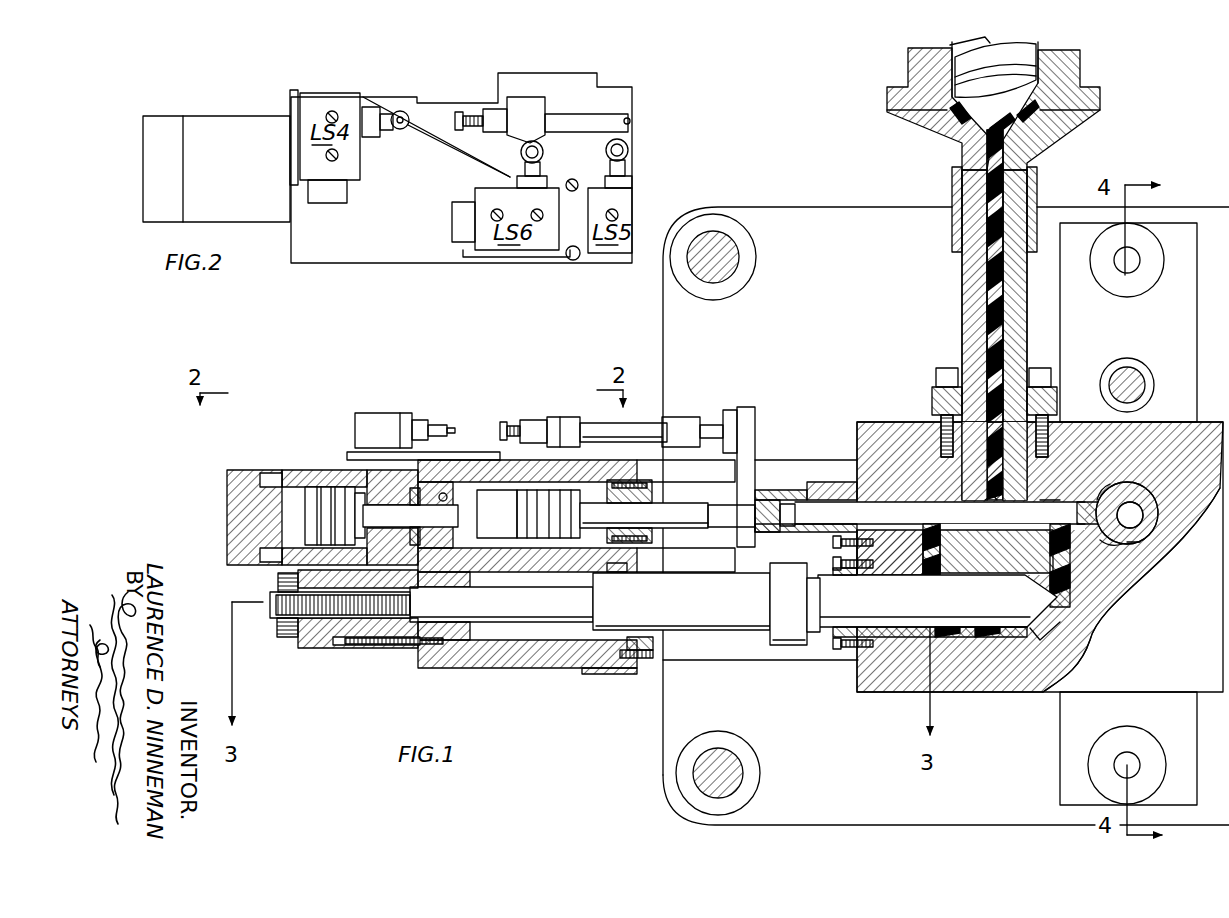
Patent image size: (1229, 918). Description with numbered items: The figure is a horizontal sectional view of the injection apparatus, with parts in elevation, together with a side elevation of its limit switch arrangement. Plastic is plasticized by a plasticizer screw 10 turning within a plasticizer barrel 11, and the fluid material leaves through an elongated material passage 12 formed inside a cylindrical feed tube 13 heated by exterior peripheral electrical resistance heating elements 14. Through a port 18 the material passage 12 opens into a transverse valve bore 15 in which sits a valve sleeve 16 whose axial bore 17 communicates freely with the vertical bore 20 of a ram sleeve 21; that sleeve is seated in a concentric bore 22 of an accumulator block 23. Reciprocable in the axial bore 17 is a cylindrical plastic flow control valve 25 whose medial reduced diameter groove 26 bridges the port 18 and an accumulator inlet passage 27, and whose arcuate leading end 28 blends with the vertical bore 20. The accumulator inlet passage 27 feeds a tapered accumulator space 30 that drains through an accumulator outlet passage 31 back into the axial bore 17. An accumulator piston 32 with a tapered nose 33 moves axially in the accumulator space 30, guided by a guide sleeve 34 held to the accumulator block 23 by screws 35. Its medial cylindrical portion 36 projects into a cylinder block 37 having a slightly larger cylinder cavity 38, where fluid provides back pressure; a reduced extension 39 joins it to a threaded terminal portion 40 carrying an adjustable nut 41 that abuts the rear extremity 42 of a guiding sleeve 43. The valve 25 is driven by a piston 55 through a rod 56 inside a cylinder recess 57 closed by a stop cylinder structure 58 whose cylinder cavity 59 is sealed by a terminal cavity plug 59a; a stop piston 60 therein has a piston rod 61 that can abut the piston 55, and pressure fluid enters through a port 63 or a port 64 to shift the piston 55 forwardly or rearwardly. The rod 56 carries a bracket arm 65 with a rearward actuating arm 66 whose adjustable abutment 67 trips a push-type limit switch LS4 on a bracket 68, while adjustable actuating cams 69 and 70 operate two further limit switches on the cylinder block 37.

In FIG. 1, the plasticizer screw 10 is at (1020, 62).
In FIG. 1, the plasticizer barrel 11 is at (1080, 88).
In FIG. 1, the material passage 12 is at (997, 178).
In FIG. 1, the feed tube 13 is at (962, 265).
In FIG. 1, the heating elements 14 is at (958, 228).
In FIG. 1, the valve bore 15 is at (1045, 500).
In FIG. 1, the valve sleeve 16 is at (1097, 500).
In FIG. 1, the axial bore 17 is at (900, 508).
In FIG. 1, the port 18 is at (993, 496).
In FIG. 1, the vertical bore 20 is at (1133, 514).
In FIG. 1, the ram sleeve 21 is at (1140, 528).
In FIG. 1, the concentric bore 22 is at (1125, 548).
In FIG. 1, the accumulator block 23 is at (1218, 435).
In FIG. 1, the plastic flow control valve 25 is at (1046, 524).
In FIG. 1, the groove 26 is at (975, 538).
In FIG. 1, the accumulator inlet passage 27 is at (940, 562).
In FIG. 1, the arcuate leading end 28 is at (1125, 500).
In FIG. 1, the accumulator space 30 is at (972, 628).
In FIG. 1, the accumulator outlet passage 31 is at (1062, 588).
In FIG. 1, the accumulator piston 32 is at (866, 610).
In FIG. 1, the tapered nose 33 is at (1042, 622).
In FIG. 1, the guide sleeve 34 is at (890, 640).
In FIG. 1, the screws 35 is at (836, 646).
In FIG. 1, the medial cylindrical portion 36 is at (688, 607).
In FIG. 1, the cylinder block 37 is at (535, 662).
In FIG. 1, the cylinder cavity 38 is at (505, 655).
In FIG. 1, the extension 39 is at (509, 612).
In FIG. 1, the threaded terminal portion 40 is at (320, 612).
In FIG. 1, the adjustable nut 41 is at (287, 638).
In FIG. 1, the rear extremity 42 is at (280, 590).
In FIG. 1, the sleeve 43 is at (378, 650).
In FIG. 1, the piston 55 is at (510, 525).
In FIG. 1, the rod 56 is at (659, 522).
In FIG. 1, the cylinder recess 57 is at (462, 482).
In FIG. 1, the stop cylinder structure 58 is at (312, 470).
In FIG. 1, the cylinder cavity 59 is at (295, 485).
In FIG. 1, the terminal cavity plug 59a is at (245, 540).
In FIG. 1, the stop piston 60 is at (320, 514).
In FIG. 1, the piston rod 61 is at (397, 525).
In FIG. 1, the port 63 is at (443, 502).
In FIG. 1, the port 64 is at (620, 490).
In FIG. 1, the bracket arm 65 is at (745, 424).
In FIG. 1, the actuating arm 66 is at (600, 423).
In FIG. 1, the adjustable abutment 67 is at (503, 421).
In FIG. 1, the bracket 68 is at (350, 455).
In FIG. 2, the actuating cam 69 is at (527, 98).
In FIG. 1, the actuating cam 69 is at (560, 417).
In FIG. 1, the actuating cam 70 is at (685, 417).
In FIG. 1, the limit switch LS4 is at (383, 416).